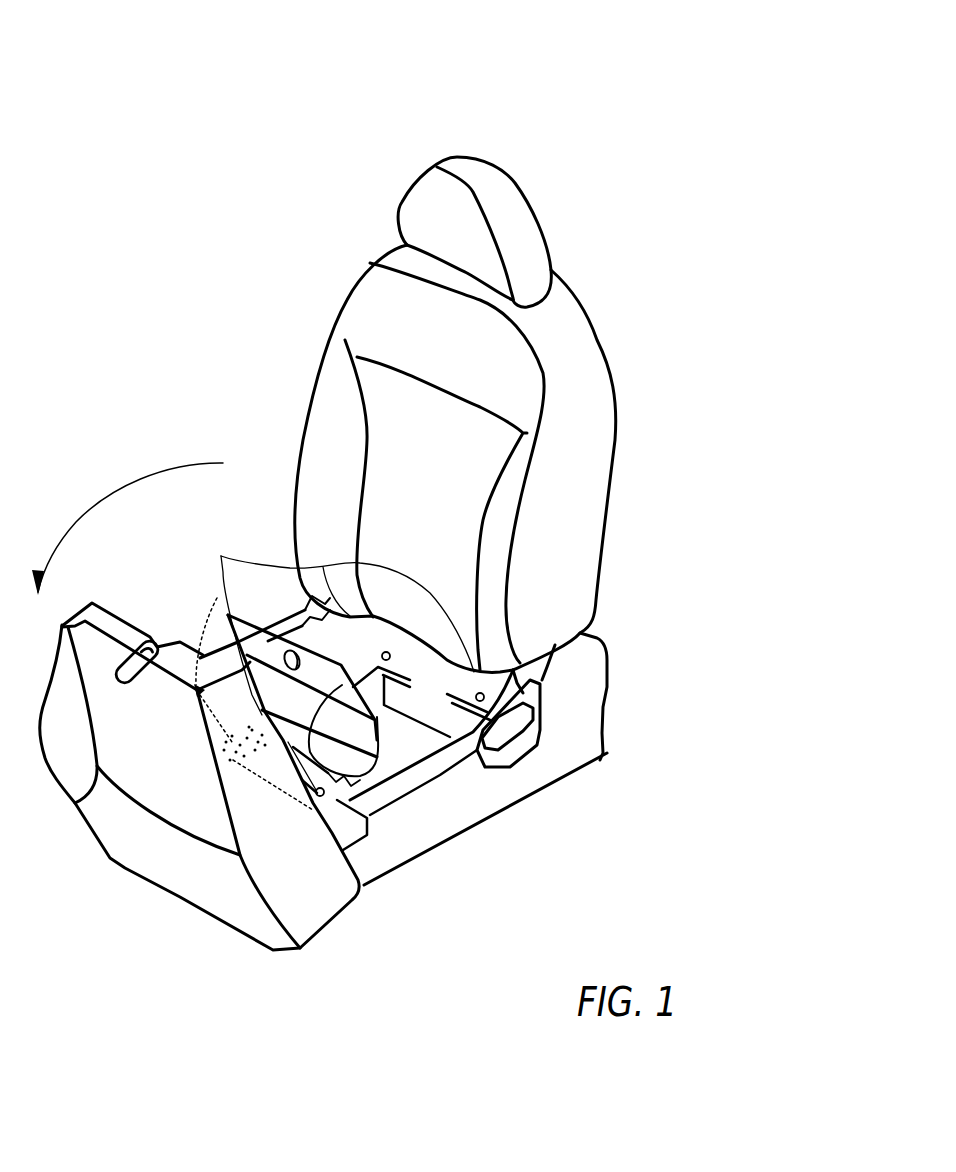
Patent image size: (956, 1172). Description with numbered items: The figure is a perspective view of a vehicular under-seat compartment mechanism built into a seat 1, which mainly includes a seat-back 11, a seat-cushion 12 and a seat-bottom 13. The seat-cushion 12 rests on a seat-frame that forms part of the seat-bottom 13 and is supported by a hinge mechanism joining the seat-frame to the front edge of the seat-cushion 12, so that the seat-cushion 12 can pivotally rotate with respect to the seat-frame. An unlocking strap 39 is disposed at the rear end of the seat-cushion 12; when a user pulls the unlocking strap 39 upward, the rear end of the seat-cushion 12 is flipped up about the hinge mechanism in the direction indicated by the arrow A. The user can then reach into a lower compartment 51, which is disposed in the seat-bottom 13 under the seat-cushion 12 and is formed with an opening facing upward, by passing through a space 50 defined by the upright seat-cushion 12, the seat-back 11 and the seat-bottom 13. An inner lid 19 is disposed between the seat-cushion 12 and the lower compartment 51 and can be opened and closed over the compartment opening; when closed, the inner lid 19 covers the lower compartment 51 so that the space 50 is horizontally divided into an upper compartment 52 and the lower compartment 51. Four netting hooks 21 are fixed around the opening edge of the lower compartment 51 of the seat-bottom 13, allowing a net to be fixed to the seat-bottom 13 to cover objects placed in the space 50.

The seat 1 is at (642, 122).
The seat-back 11 is at (587, 340).
The seat-cushion 12 is at (187, 883).
The seat-bottom 13 is at (503, 787).
The inner lid 19 is at (402, 788).
The netting hooks 21 is at (221, 556).
The unlocking strap 39 is at (128, 632).
The space 50 is at (443, 692).
The lower compartment 51 is at (409, 753).
The upper compartment 52 is at (358, 644).